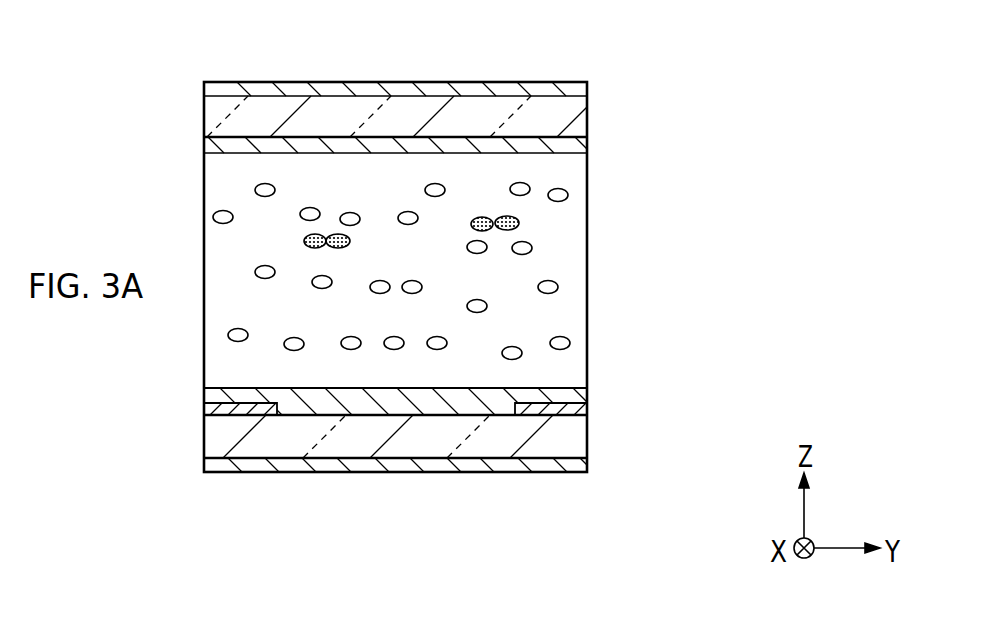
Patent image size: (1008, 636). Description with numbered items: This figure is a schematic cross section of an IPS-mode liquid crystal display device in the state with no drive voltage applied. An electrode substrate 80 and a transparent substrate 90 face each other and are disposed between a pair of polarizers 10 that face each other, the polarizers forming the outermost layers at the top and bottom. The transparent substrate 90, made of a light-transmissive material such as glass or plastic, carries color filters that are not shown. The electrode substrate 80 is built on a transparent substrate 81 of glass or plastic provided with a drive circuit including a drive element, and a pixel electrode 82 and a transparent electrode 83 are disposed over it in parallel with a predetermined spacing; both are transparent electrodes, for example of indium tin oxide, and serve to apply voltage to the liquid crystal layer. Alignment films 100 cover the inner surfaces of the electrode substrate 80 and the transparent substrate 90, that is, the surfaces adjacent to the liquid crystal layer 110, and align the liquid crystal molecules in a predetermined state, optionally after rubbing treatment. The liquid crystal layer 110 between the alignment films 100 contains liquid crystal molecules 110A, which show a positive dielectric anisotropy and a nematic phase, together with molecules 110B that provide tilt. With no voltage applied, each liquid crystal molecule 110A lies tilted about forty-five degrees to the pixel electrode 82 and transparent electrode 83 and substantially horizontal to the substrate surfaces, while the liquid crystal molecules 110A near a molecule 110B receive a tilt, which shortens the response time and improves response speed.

The polarizer 10 is at (238, 88).
The transparent substrate 90 is at (382, 88).
The alignment film 100 is at (589, 141).
The liquid crystal layer 110 is at (486, 269).
The liquid crystal molecule 110A is at (552, 286).
The molecule 110B is at (496, 227).
The electrode substrate 80 is at (417, 510).
The transparent substrate 81 is at (407, 437).
The pixel electrode 82 is at (261, 405).
The transparent electrode 83 is at (538, 405).